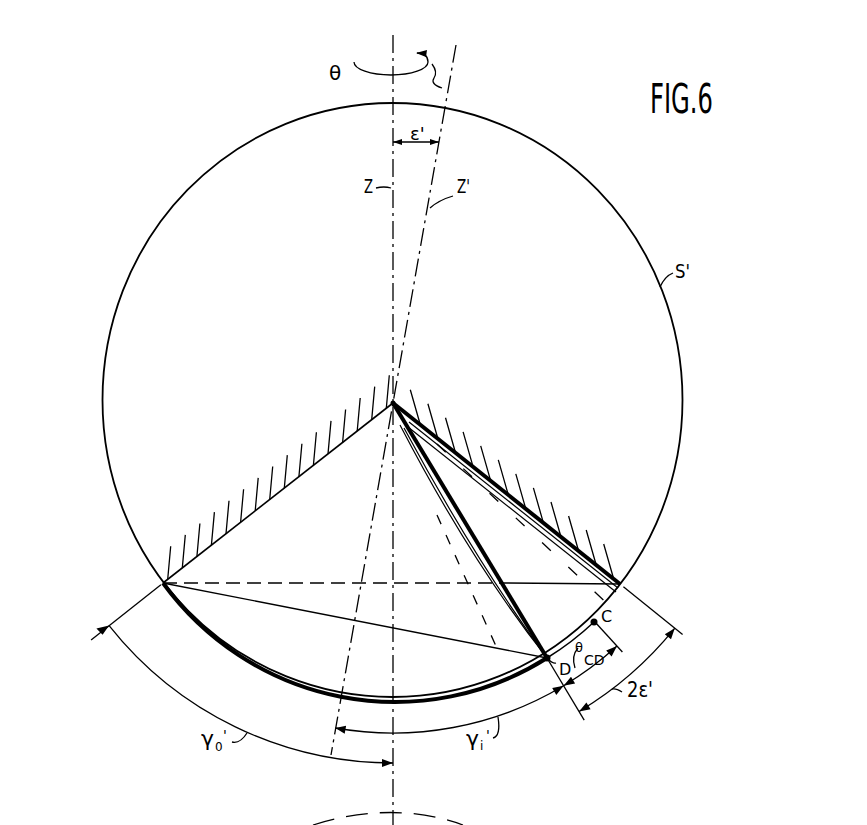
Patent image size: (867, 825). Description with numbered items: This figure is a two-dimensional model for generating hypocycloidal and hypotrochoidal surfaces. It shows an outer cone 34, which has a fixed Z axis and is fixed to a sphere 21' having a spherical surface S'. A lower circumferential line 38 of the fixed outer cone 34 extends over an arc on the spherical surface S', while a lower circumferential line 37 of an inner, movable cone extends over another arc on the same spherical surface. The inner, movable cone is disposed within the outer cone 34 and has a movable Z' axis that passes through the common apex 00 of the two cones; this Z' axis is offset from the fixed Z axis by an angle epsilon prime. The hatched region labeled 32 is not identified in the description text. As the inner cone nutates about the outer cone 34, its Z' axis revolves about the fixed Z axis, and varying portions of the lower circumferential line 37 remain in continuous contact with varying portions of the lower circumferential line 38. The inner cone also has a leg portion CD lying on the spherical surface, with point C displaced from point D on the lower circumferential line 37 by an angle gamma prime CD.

The sphere 21' is at (420, 400).
The common apex 00 is at (396, 402).
The conical reflecting surface 32 is at (335, 522).
The outer cone 34 is at (530, 508).
The lower circumferential line of inner movable cone 37 is at (293, 609).
The lower circumferential line of fixed outer cone 38 is at (544, 584).